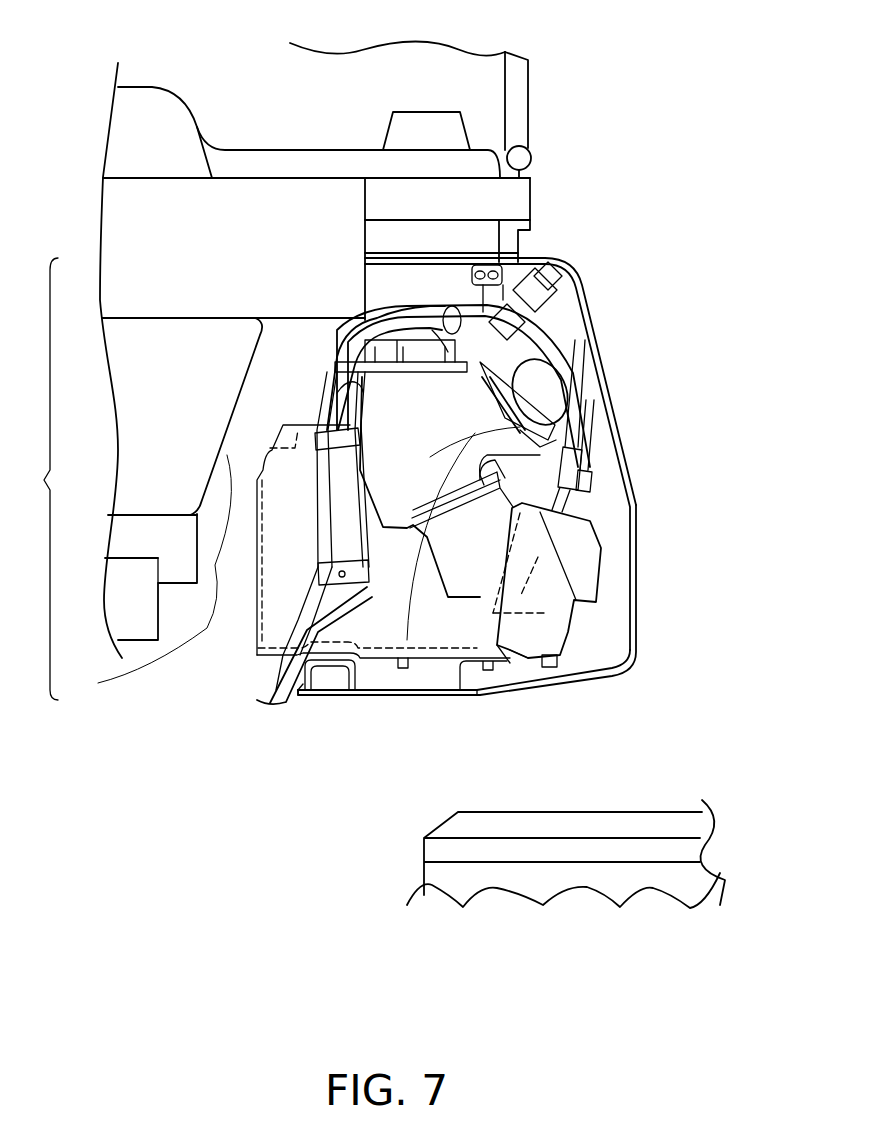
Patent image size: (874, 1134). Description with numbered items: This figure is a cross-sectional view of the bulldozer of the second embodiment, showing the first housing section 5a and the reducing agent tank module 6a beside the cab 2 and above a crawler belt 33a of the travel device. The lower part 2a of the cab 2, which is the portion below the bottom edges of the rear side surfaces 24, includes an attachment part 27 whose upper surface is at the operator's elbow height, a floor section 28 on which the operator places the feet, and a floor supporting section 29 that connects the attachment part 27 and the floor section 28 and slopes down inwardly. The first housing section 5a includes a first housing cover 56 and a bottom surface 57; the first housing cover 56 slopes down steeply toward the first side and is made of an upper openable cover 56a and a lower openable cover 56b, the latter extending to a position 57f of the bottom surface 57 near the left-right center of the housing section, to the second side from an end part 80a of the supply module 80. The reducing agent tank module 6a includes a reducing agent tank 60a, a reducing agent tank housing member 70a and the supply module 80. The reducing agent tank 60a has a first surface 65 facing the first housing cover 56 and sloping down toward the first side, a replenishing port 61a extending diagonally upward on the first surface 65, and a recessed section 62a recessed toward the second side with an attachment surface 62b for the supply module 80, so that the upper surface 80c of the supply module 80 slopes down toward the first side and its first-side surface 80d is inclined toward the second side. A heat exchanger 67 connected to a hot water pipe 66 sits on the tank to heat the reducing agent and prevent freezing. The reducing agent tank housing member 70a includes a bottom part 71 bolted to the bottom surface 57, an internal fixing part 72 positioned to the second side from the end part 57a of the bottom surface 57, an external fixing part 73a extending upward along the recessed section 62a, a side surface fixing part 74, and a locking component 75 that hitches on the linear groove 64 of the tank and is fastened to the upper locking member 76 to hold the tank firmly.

The cab 2 is at (109, 70).
The lower part of the cab 2a is at (30, 479).
The rear side surface 24 is at (522, 112).
The attachment part 27 is at (146, 278).
The floor section 28 is at (142, 543).
The floor supporting section 29 is at (145, 580).
The first housing section 5a is at (575, 268).
The reducing agent tank module 6a is at (363, 672).
The crawler belt 33a is at (648, 825).
The first housing cover 56 is at (637, 580).
The upper openable cover 56a is at (608, 372).
The lower openable cover 56b is at (633, 643).
The bottom surface 57 is at (417, 698).
The end part of the bottom surface 57a is at (303, 697).
The position of the bottom surface 57f is at (472, 707).
The reducing agent tank 60a is at (522, 330).
The replenishing port 61a is at (552, 390).
The recessed section 62a is at (577, 513).
The attachment surface 62b is at (510, 663).
The groove 64 is at (562, 425).
The first surface 65 is at (410, 580).
The hot water pipe 66 is at (432, 300).
The heat exchanger 67 is at (502, 283).
The reducing agent tank housing member 70a is at (267, 660).
The bottom part 71 is at (387, 667).
The internal fixing part 72 is at (253, 607).
The external fixing part 73a is at (563, 653).
The side surface fixing part 74 is at (387, 593).
The locking component 75 is at (570, 456).
The upper locking member 76 is at (557, 490).
The supply module 80 is at (597, 532).
The end part of the supply module 80a is at (527, 660).
The upper surface of the supply module 80c is at (578, 542).
The first-side surface of the supply module 80d is at (597, 593).